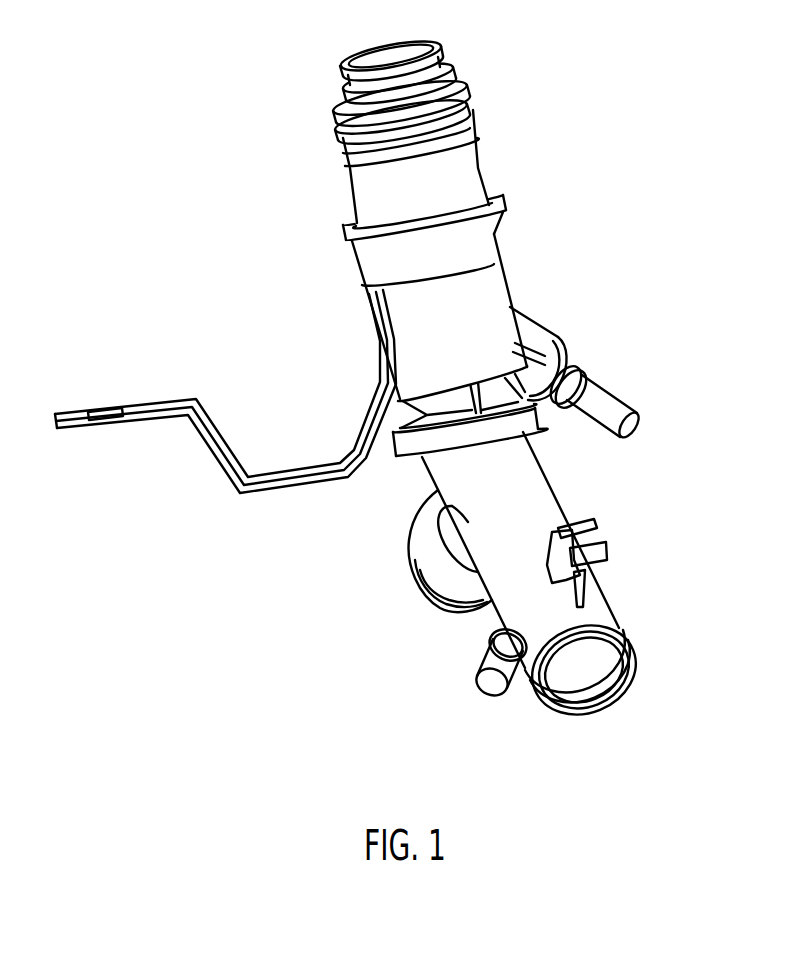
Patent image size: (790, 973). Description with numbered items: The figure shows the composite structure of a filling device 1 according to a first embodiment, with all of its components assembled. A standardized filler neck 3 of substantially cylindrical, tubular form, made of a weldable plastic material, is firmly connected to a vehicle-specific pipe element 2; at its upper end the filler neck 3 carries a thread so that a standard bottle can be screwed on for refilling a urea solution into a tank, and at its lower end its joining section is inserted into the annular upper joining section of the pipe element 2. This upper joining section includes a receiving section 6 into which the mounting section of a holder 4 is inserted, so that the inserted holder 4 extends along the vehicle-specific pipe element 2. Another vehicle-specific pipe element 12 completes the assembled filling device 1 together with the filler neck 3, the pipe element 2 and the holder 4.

The coolant connection assembly 1 is at (541, 59).
The vehicle-specific pipe element 2 is at (520, 284).
The standardized filler neck 3 is at (480, 152).
The holder 4 is at (270, 500).
The receiving section 6 is at (497, 243).
The vehicle-specific pipe element 12 is at (608, 605).